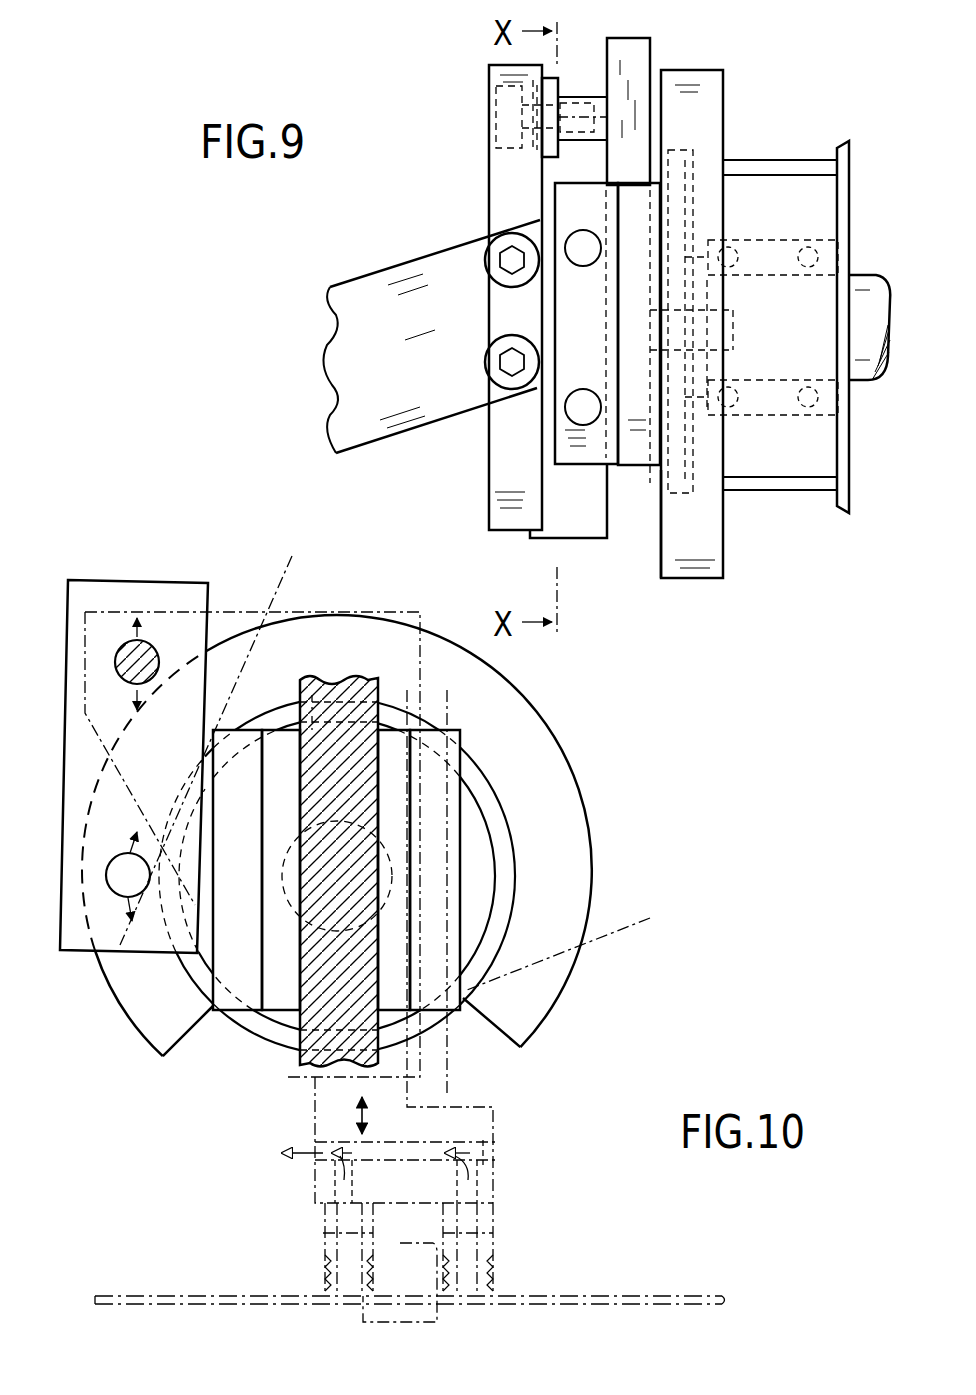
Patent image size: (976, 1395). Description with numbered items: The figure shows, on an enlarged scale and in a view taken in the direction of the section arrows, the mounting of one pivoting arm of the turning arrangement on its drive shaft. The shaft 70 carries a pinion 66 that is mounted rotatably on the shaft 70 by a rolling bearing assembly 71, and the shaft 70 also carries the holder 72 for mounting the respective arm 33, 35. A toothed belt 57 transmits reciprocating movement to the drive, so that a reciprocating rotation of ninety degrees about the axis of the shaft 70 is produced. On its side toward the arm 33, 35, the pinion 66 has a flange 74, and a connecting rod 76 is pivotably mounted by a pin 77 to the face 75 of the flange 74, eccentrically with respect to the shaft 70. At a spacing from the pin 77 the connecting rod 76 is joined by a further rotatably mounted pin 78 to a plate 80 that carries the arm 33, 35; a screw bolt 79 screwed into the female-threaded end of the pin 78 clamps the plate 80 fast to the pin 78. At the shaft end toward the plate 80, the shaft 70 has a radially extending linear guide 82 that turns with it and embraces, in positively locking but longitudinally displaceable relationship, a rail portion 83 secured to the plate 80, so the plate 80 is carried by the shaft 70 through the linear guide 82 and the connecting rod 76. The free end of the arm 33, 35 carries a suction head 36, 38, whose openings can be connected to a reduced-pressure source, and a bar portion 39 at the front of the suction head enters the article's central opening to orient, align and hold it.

In FIG. 9, the arm 33 is at (382, 336).
In FIG. 10, the arm 33 is at (553, 920).
In FIG. 9, the arm 35 is at (345, 338).
In FIG. 10, the arm 35 is at (435, 932).
In FIG. 10, the suction head 36 is at (410, 1200).
In FIG. 10, the suction head 38 is at (499, 1160).
In FIG. 10, the bar portion 39 is at (375, 1310).
In FIG. 10, the toothed belt 57 is at (290, 556).
In FIG. 9, the pinion 66 is at (773, 166).
In FIG. 10, the pinion 66 is at (246, 690).
In FIG. 9, the shaft 70 is at (862, 287).
In FIG. 10, the shaft 70 is at (415, 886).
In FIG. 9, the rolling bearing assembly 71 is at (806, 406).
In FIG. 9, the holder 72 is at (446, 224).
In FIG. 9, the flange 74 is at (707, 93).
In FIG. 10, the flange 74 is at (175, 1033).
In FIG. 9, the face of the flange 75 is at (657, 537).
In FIG. 10, the face of the flange 75 is at (164, 1012).
In FIG. 9, the connecting rod 76 is at (634, 68).
In FIG. 10, the connecting rod 76 is at (163, 592).
In FIG. 9, the pin 77 is at (733, 343).
In FIG. 10, the pin 77 is at (123, 887).
In FIG. 9, the pin 78 is at (597, 100).
In FIG. 10, the pin 78 is at (122, 640).
In FIG. 9, the screw bolt 79 is at (503, 120).
In FIG. 9, the plate 80 is at (489, 192).
In FIG. 9, the linear guide 82 is at (573, 437).
In FIG. 10, the linear guide 82 is at (396, 810).
In FIG. 9, the rail portion 83 is at (580, 538).
In FIG. 10, the rail portion 83 is at (352, 678).